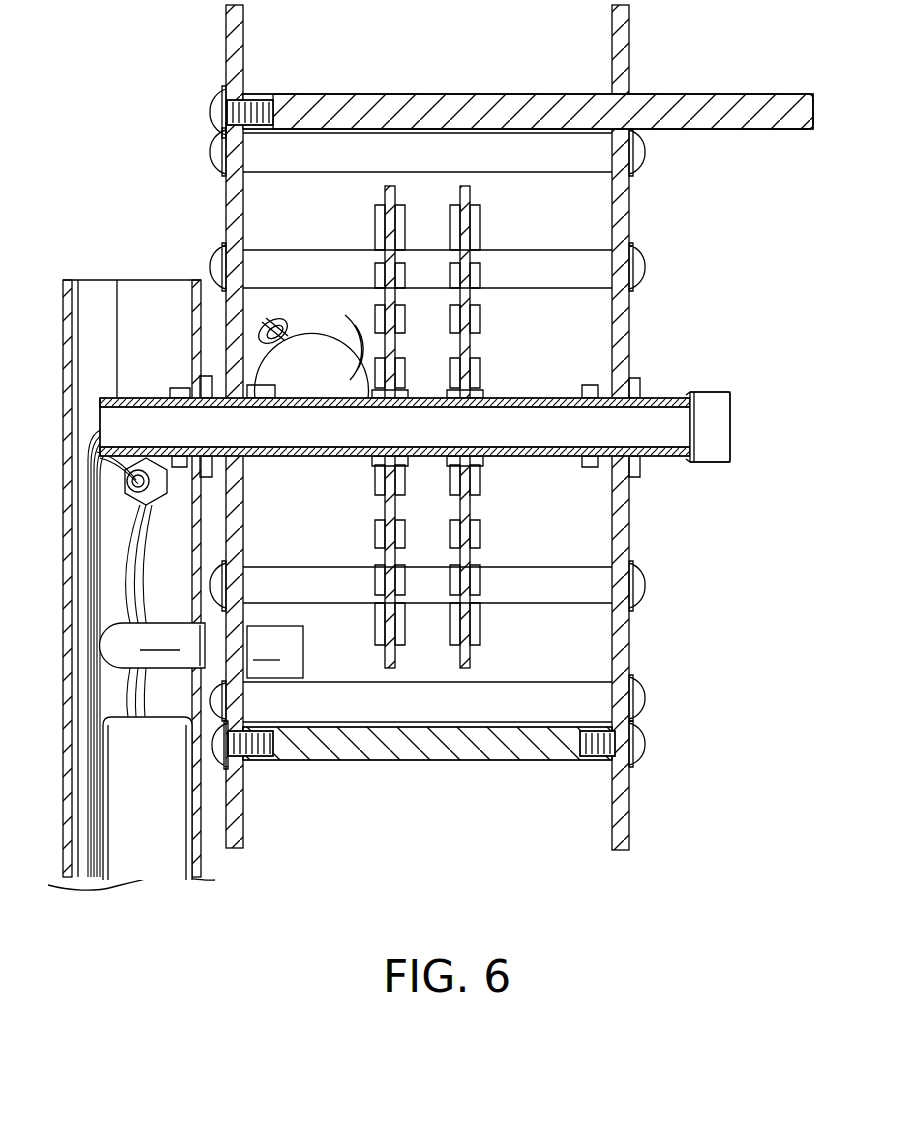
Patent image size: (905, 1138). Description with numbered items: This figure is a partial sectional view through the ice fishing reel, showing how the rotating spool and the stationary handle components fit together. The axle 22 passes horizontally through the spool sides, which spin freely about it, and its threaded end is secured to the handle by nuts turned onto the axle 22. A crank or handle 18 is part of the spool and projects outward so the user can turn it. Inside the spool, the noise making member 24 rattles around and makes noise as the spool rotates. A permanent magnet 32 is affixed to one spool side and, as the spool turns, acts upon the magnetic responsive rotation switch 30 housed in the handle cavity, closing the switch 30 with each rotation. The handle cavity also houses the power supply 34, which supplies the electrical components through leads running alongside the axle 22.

The crank or handle 18 is at (688, 117).
The axle 22 is at (510, 457).
The noise making member 24 is at (303, 310).
The rotation switch 30 is at (157, 638).
The permanent magnet 32 is at (292, 648).
The power supply 34 is at (128, 855).